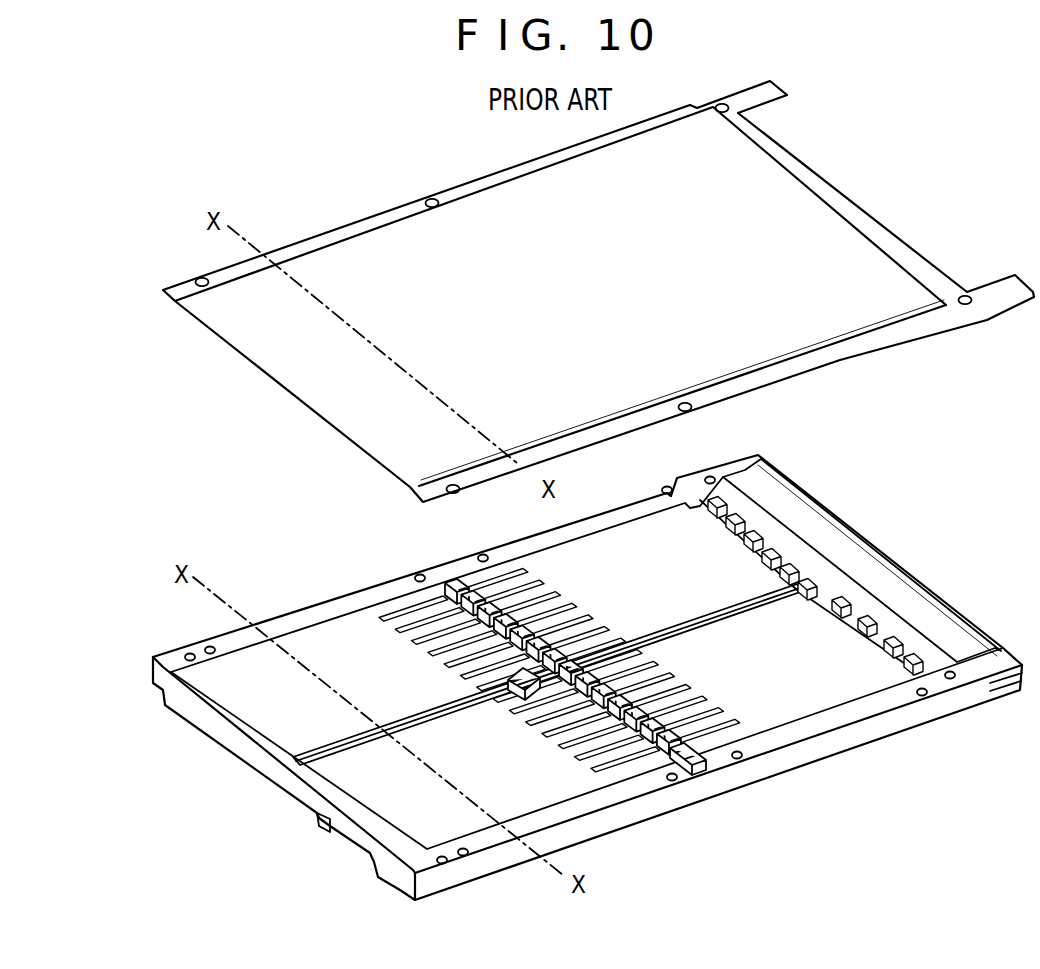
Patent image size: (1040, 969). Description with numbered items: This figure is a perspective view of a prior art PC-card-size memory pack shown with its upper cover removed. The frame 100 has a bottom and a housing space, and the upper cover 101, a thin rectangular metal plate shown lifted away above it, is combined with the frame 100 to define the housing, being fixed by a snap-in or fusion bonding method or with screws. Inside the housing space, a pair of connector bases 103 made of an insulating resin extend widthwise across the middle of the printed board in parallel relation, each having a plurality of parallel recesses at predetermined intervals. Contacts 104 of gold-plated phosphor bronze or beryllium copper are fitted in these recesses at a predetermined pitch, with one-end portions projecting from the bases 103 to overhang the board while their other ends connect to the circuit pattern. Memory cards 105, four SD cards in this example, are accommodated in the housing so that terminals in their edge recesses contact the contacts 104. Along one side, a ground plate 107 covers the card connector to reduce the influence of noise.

The frame 100 is at (860, 735).
The upper cover 101 is at (937, 330).
The connector bases 103 is at (470, 590).
The contacts 104 is at (430, 663).
The memory cards 105 is at (673, 577).
The ground plate 107 is at (903, 587).